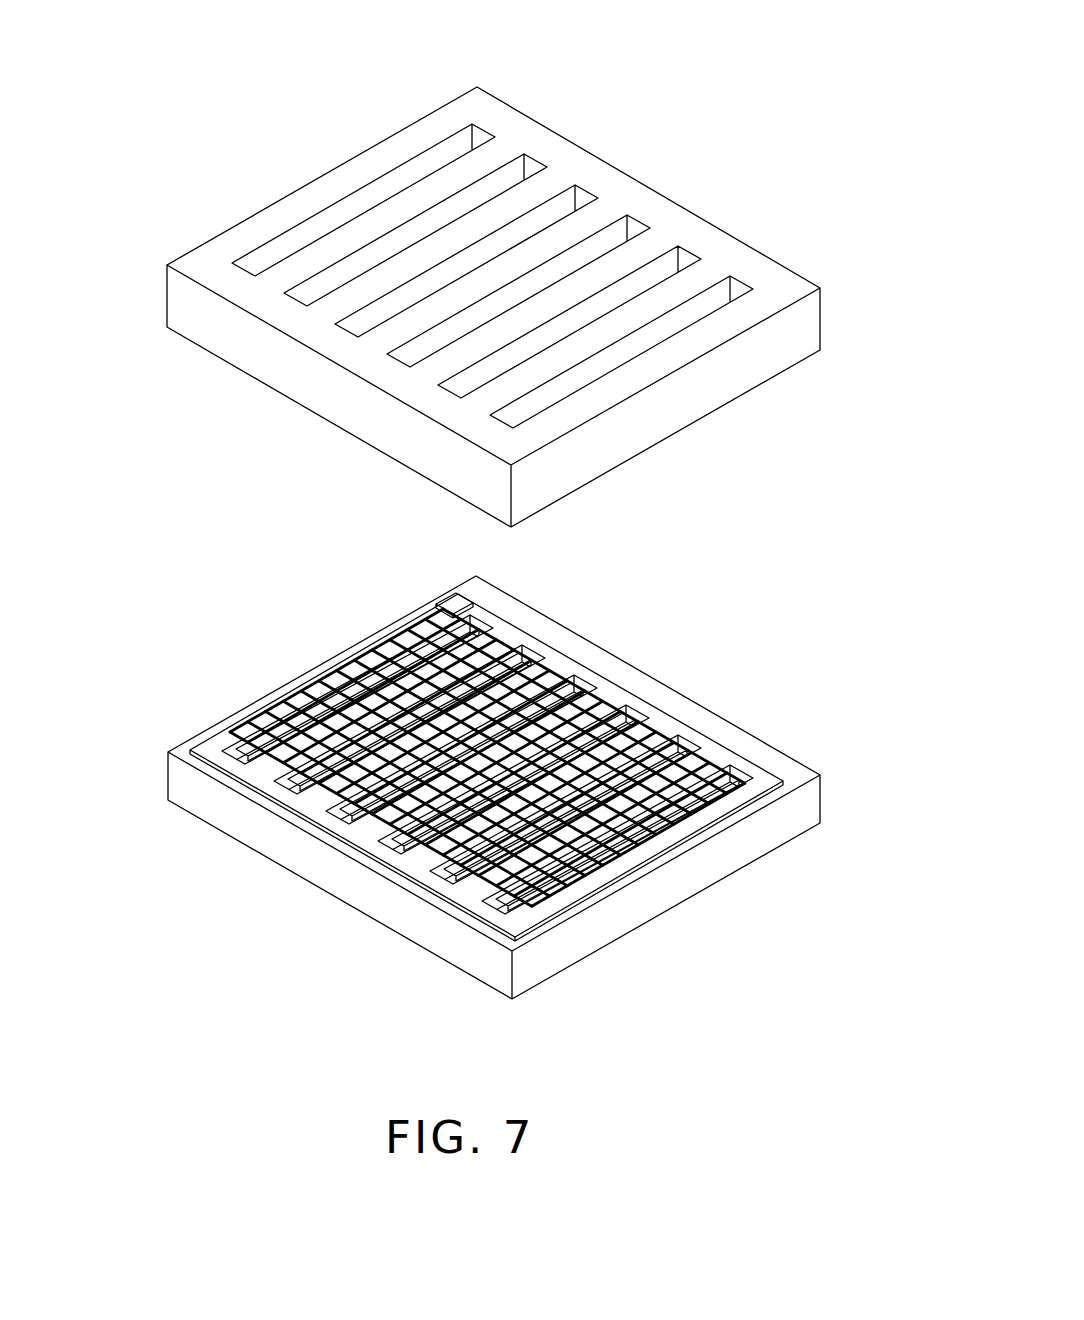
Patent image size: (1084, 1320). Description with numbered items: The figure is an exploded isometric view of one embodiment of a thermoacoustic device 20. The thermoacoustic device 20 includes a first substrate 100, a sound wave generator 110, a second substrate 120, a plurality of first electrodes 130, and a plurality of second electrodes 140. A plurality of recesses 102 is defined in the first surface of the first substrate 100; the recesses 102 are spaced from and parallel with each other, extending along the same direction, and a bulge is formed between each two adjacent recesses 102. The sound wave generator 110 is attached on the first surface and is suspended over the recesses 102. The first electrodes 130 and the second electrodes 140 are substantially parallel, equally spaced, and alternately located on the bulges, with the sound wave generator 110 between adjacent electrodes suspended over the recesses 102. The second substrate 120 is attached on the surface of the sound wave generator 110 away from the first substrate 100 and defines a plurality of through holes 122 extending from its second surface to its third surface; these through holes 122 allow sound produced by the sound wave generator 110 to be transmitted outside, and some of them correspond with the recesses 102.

The thermoacoustic device 20 is at (612, 58).
The first substrate 100 is at (548, 963).
The recesses 102 is at (602, 855).
The sound wave generator 110 is at (503, 632).
The second substrate 120 is at (515, 307).
The through holes 122 is at (670, 265).
The first electrodes 130 is at (450, 605).
The second electrodes 140 is at (486, 758).